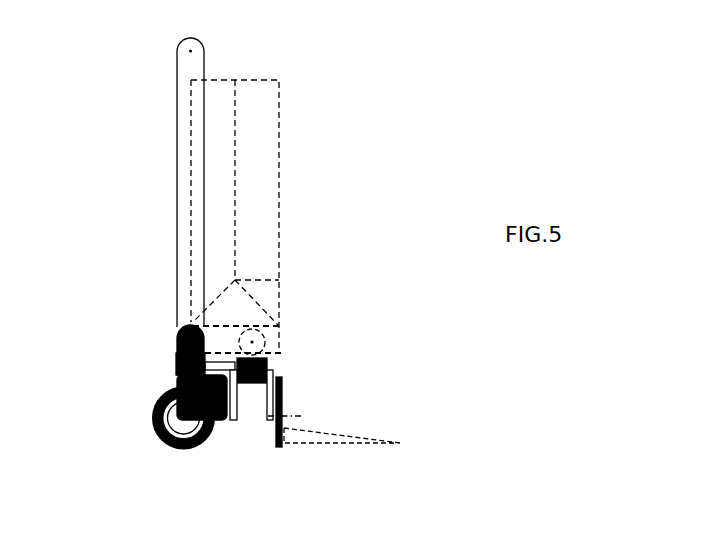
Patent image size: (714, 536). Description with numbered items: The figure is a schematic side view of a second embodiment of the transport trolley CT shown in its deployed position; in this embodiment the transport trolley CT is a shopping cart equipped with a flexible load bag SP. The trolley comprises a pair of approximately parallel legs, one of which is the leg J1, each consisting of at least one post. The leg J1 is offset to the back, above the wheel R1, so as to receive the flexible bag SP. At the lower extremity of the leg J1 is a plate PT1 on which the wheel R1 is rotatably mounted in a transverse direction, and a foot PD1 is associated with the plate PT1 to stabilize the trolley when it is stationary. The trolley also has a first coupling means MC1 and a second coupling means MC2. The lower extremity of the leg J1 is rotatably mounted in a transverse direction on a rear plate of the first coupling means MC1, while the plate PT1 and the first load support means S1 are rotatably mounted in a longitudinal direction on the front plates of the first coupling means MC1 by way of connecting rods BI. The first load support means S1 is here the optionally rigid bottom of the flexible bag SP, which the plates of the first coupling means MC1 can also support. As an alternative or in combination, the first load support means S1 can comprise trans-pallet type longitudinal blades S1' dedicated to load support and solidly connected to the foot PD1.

The transport trolley CT is at (161, 131).
The leg J1 is at (178, 175).
The flexible load bag SP is at (275, 123).
The first coupling means MC1 is at (175, 338).
The second coupling means MC2 is at (165, 357).
The plate PT1 is at (178, 380).
The wheel R1 is at (152, 417).
The first load support means S1 is at (288, 318).
The longitudinal blade S1' is at (350, 421).
The foot PD1 is at (278, 411).
The connecting rod BI is at (228, 422).